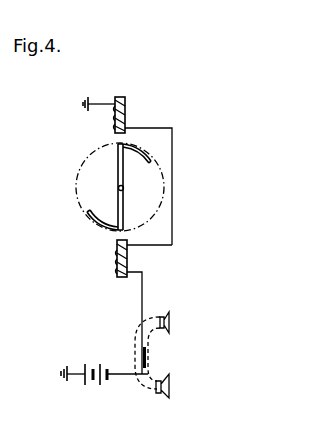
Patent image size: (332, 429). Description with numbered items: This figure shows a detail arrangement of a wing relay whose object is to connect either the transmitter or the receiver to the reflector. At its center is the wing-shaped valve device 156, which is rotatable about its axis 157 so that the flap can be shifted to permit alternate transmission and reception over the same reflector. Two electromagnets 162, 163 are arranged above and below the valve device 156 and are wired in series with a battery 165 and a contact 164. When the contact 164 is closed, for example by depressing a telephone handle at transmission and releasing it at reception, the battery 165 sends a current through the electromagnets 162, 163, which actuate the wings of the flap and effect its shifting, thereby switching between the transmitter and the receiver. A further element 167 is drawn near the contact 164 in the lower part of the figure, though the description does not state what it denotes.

The wing-shaped valve device 156 is at (118, 202).
The axis 157 is at (124, 187).
The electromagnet 162 is at (126, 106).
The electromagnet 163 is at (128, 261).
The contact 164 is at (142, 353).
The battery 165 is at (104, 385).
The signal device 167 is at (161, 380).